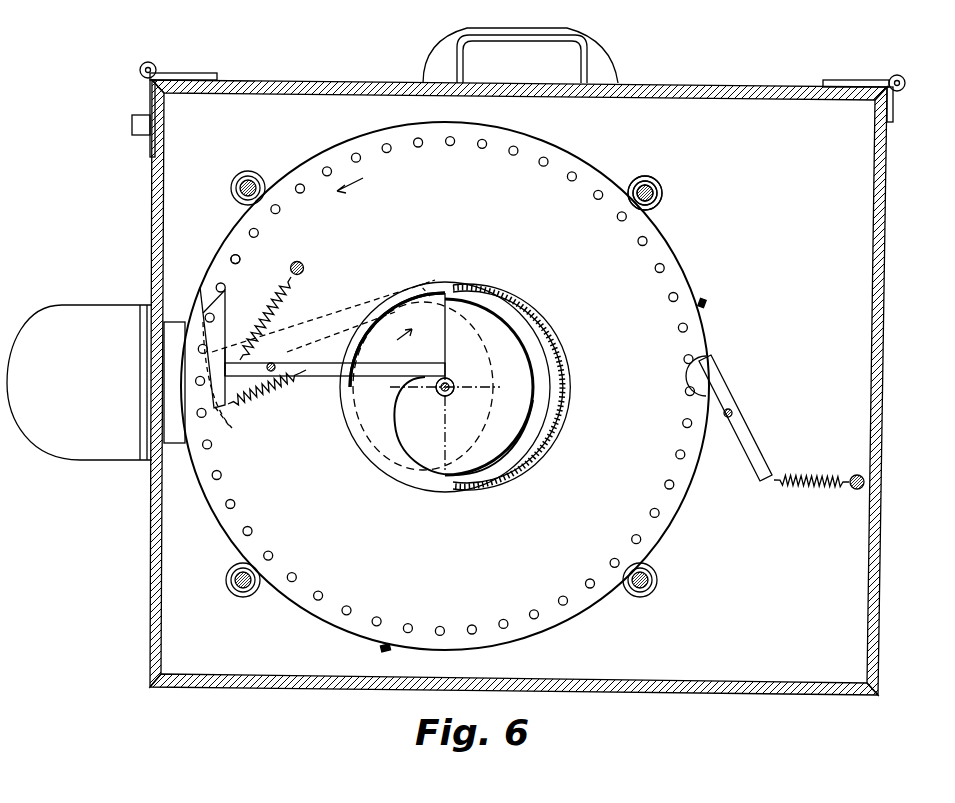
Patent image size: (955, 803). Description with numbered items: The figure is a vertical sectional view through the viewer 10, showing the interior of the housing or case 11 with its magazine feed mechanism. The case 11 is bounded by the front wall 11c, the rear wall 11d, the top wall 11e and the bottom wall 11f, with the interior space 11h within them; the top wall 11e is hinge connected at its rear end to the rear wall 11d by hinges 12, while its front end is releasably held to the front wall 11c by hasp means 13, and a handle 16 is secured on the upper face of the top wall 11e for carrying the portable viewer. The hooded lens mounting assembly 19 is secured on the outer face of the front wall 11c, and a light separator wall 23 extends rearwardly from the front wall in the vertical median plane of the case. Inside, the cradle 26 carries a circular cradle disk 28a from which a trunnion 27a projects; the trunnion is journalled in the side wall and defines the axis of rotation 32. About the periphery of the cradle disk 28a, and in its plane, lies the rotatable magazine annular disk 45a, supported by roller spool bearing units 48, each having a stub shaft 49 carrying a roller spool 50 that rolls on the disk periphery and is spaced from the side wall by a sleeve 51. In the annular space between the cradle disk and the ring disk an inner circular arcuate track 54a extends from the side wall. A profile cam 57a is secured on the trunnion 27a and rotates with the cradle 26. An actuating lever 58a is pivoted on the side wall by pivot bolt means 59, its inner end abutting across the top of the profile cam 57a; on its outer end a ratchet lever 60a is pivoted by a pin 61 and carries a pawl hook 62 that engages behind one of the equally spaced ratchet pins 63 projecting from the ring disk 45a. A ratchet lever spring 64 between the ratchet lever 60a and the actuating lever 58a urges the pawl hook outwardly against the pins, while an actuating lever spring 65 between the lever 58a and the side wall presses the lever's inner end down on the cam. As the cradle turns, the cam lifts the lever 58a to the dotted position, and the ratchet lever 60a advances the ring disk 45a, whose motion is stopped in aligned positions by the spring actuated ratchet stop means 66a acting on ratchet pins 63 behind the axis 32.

The viewer 10 is at (750, 695).
The housing or case 11 is at (885, 495).
The front wall 11c is at (165, 126).
The rear wall 11d is at (873, 224).
The top wall 11e is at (730, 100).
The bottom wall 11f is at (722, 683).
The housing interior 11h is at (790, 540).
The hinges 12 is at (905, 83).
The hasp means 13 is at (140, 74).
The handle 16 is at (615, 41).
The hooded lens mounting assembly 19 is at (88, 305).
The light separator wall 23 is at (172, 455).
The cradle 26 is at (440, 283).
The trunnion 27a is at (449, 380).
The cradle disk 28a is at (423, 386).
The axis of rotation 32 is at (452, 393).
The magazine annular disk 45a is at (445, 387).
The roller spool bearing unit 48 is at (664, 190).
The stub shaft 49 is at (647, 180).
The roller spool 50 is at (633, 185).
The sleeve 51 is at (656, 200).
The inner circular arcuate track 54a is at (552, 373).
The profile cam 57a is at (463, 426).
The actuating lever 58a is at (372, 377).
The pivot bolt means 59 is at (275, 360).
The ratchet lever 60a is at (228, 300).
The pin 61 is at (226, 358).
The pawl hook 62 is at (200, 287).
The ratchet pins 63 is at (231, 258).
The ratchet lever spring 64 is at (260, 395).
The actuating lever spring 65 is at (306, 275).
The spring actuated ratchet stop means 66a is at (754, 425).